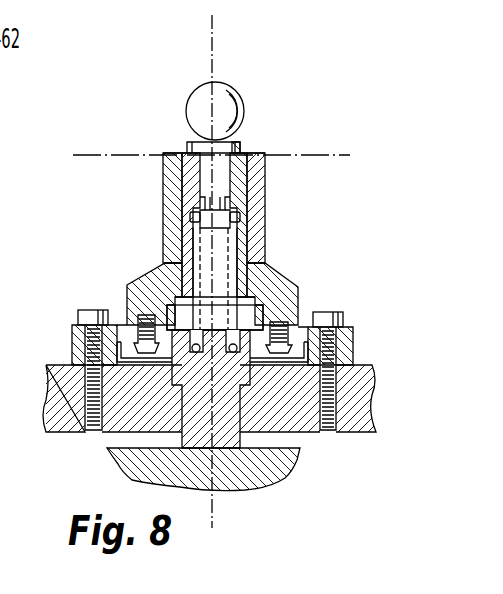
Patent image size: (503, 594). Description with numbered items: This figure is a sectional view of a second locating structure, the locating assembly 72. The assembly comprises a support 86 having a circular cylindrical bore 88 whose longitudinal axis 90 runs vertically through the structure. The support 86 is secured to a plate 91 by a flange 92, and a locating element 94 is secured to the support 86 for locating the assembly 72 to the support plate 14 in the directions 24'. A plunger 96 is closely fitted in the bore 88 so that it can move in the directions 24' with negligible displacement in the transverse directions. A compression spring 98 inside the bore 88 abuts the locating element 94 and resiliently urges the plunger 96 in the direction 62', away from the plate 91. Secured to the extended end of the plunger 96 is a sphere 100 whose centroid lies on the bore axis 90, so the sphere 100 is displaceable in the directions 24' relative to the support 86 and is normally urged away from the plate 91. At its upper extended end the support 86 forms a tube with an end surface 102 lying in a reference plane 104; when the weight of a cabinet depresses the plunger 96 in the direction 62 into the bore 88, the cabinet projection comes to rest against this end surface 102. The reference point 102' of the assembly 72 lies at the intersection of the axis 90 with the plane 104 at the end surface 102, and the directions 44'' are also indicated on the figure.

The longitudinal axis 90 is at (213, 48).
The reference plane 104 is at (114, 157).
The sphere 100 is at (228, 96).
The end surface 102 is at (191, 129).
The reference point 102' is at (253, 136).
The plunger 96 is at (240, 205).
The compression spring 98 is at (192, 217).
The support 86 is at (290, 312).
The circular cylindrical bore 88 is at (248, 267).
The flange 92 is at (72, 346).
The locating element 94 is at (240, 413).
The plate 91 is at (50, 405).
The support plate 14 is at (288, 470).
The locating assembly 72 is at (114, 268).
The direction 62' is at (160, 77).
The directions 24' is at (330, 91).
The direction 62 is at (327, 192).
The axis reference 44'' is at (215, 509).